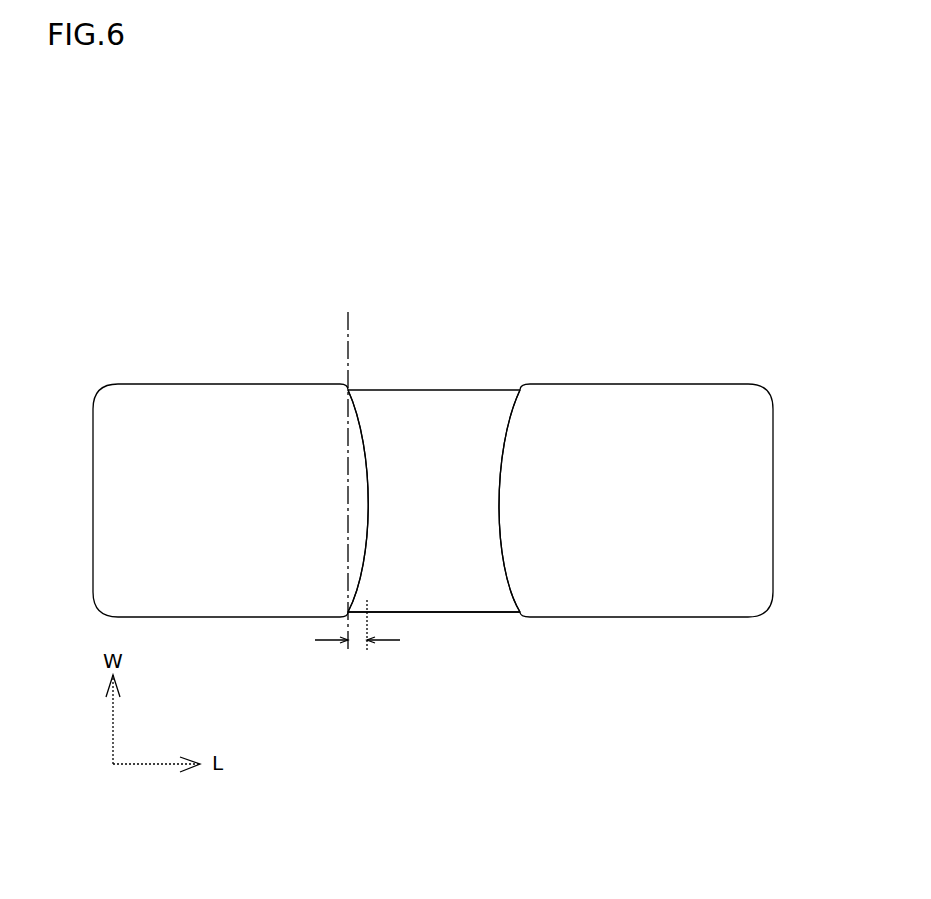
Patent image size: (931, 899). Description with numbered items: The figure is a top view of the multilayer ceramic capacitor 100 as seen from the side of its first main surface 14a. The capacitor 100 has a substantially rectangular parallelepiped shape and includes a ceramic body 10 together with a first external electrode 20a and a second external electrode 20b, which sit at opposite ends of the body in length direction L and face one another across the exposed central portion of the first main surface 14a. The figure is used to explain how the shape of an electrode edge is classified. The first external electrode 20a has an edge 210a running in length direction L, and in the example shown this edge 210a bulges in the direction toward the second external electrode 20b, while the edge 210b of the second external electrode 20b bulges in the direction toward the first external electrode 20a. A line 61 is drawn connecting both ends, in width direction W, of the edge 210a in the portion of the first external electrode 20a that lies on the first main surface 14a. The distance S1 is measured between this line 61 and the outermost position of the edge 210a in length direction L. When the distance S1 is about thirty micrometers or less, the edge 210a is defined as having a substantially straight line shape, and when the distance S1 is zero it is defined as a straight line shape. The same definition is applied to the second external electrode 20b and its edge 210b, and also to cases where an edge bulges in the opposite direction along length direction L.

The multilayer ceramic capacitor 100 is at (454, 268).
The ceramic body 10 is at (473, 390).
The first external electrode 20a is at (170, 400).
The second external electrode 20b is at (659, 402).
The edge of first external electrode 210a is at (362, 434).
The edge of second external electrode 210b is at (502, 477).
The first main surface 14a is at (482, 597).
The line 61 is at (347, 340).
The distance S1 is at (360, 642).